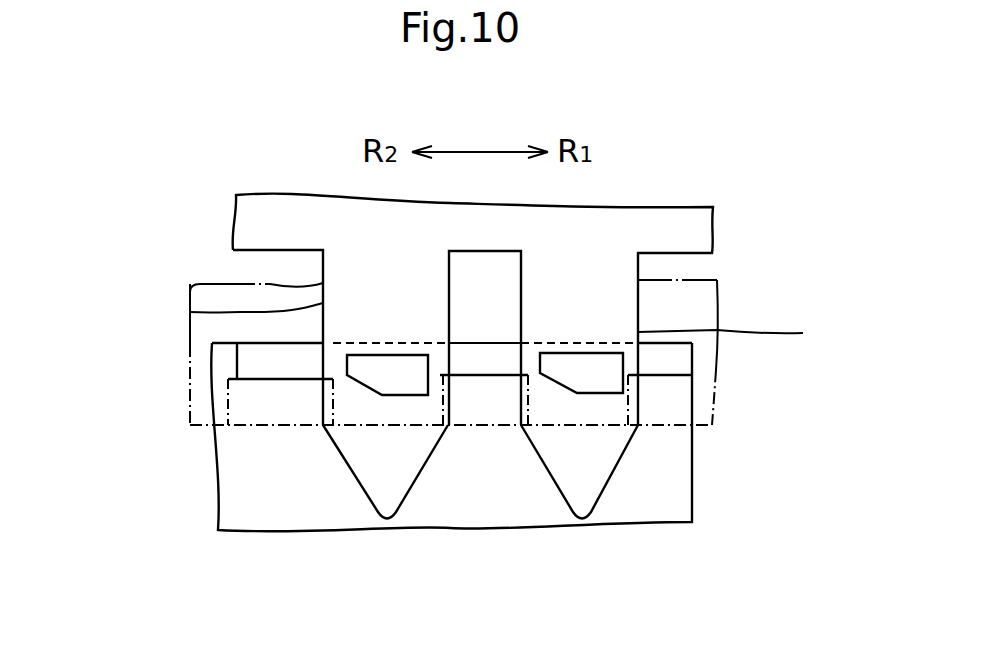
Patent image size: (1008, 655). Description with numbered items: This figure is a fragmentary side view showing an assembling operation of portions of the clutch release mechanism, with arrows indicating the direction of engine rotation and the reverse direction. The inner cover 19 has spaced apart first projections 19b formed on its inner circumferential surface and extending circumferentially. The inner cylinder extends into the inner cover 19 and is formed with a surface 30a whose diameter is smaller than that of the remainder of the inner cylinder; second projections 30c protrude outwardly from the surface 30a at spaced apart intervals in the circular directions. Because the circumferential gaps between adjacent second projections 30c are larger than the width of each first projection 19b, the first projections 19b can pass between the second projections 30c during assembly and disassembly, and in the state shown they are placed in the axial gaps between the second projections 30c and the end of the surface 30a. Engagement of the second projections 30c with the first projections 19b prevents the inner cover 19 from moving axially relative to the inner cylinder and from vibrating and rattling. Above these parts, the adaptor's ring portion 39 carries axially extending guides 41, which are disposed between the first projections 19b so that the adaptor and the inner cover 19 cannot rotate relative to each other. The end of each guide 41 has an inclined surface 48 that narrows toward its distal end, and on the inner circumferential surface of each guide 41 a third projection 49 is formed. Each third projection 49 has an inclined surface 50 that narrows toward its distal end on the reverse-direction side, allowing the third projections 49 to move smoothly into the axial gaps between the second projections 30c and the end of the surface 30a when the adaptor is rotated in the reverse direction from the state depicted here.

The inner cover 19 is at (693, 488).
The first projections 19b is at (277, 368).
The surface 30a is at (215, 335).
The second projections 30c is at (235, 391).
The ring portion 39 is at (677, 255).
The guides 41 is at (380, 368).
The inclined surface 48 is at (353, 445).
The third projections 49 is at (200, 312).
The inclined surfaces 50 is at (360, 383).